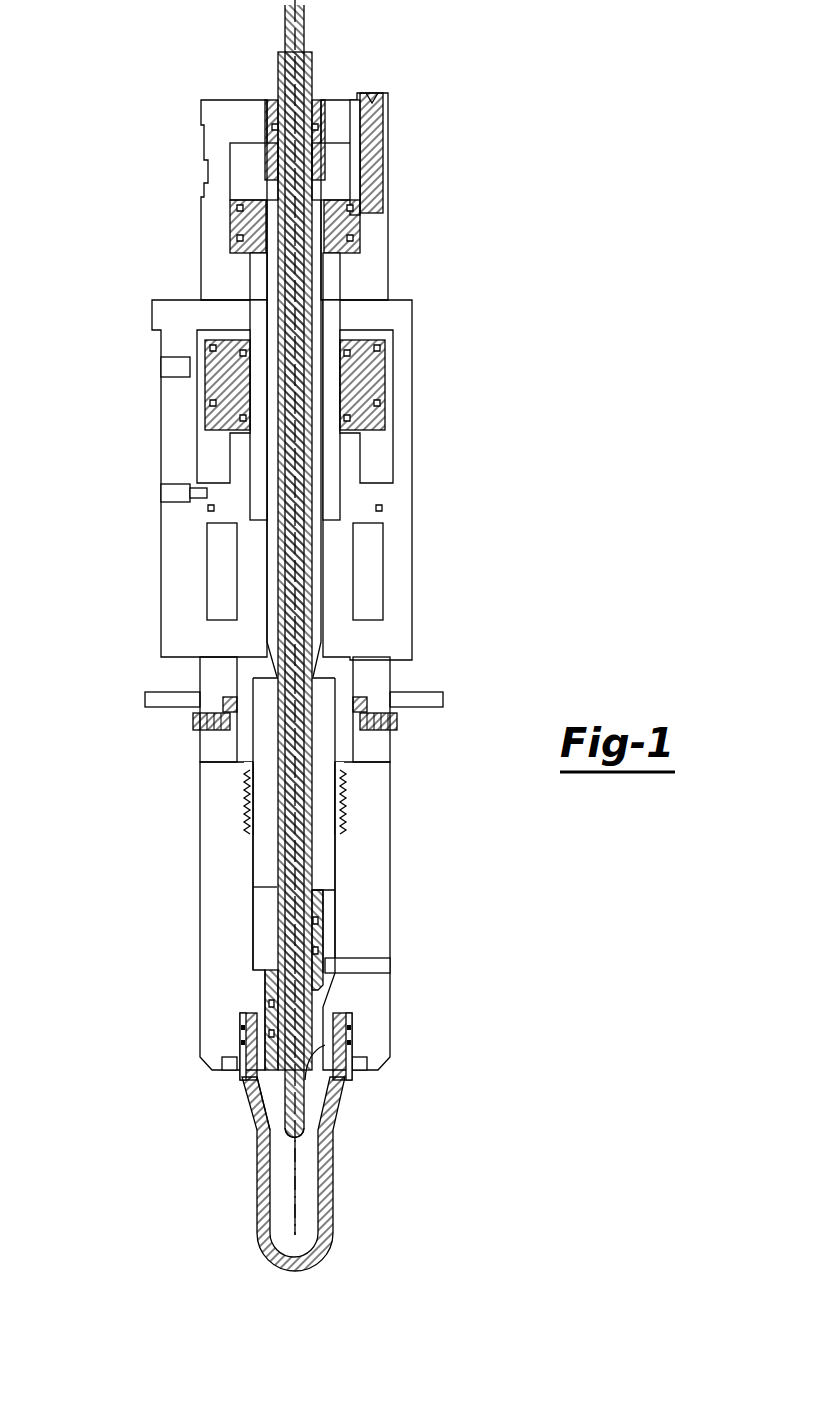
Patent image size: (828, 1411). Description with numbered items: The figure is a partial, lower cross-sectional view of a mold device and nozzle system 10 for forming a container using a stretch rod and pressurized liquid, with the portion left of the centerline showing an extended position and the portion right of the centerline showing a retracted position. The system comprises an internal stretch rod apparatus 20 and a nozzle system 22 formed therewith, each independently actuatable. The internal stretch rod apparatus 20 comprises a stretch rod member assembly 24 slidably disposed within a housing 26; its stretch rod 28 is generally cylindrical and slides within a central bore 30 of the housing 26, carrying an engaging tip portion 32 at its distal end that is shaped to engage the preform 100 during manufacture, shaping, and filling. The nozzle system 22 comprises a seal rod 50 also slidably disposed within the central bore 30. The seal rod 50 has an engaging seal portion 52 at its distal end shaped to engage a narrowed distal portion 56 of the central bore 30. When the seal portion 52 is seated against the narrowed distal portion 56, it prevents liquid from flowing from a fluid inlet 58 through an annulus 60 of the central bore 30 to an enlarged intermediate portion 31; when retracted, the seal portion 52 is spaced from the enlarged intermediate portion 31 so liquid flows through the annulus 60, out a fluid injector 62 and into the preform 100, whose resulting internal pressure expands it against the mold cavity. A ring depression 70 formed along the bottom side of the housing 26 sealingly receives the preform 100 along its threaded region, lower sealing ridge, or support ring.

The mold device and nozzle system 10 is at (276, 635).
The internal stretch rod apparatus 20 is at (312, 1195).
The nozzle system 22 is at (455, 928).
The stretch rod member assembly 24 is at (320, 850).
The housing 26 is at (412, 584).
The stretch rod 28 is at (287, 883).
The central bore 30 is at (318, 313).
The enlarged intermediate portion 31 is at (253, 947).
The engaging tip portion 32 is at (300, 1140).
The seal rod 50 is at (325, 458).
The engaging seal portion 52 is at (265, 1003).
The narrowed distal portion 56 is at (322, 1048).
The fluid inlet 58 is at (203, 160).
The annulus 60 is at (272, 286).
The fluid injector 62 is at (275, 1093).
The ring depression 70 is at (350, 1024).
The preform 100 is at (258, 1174).